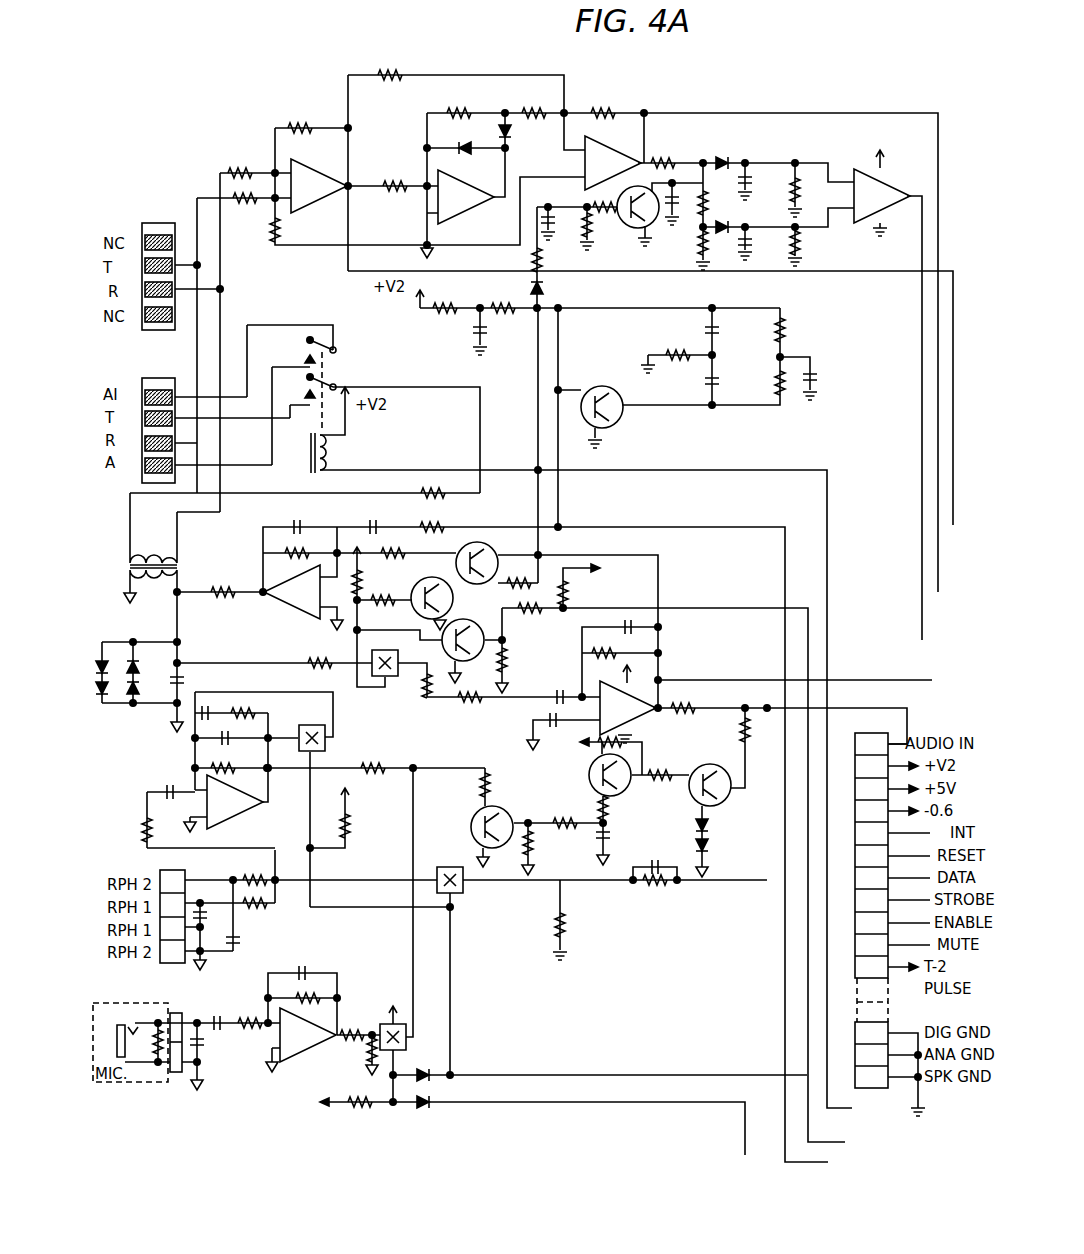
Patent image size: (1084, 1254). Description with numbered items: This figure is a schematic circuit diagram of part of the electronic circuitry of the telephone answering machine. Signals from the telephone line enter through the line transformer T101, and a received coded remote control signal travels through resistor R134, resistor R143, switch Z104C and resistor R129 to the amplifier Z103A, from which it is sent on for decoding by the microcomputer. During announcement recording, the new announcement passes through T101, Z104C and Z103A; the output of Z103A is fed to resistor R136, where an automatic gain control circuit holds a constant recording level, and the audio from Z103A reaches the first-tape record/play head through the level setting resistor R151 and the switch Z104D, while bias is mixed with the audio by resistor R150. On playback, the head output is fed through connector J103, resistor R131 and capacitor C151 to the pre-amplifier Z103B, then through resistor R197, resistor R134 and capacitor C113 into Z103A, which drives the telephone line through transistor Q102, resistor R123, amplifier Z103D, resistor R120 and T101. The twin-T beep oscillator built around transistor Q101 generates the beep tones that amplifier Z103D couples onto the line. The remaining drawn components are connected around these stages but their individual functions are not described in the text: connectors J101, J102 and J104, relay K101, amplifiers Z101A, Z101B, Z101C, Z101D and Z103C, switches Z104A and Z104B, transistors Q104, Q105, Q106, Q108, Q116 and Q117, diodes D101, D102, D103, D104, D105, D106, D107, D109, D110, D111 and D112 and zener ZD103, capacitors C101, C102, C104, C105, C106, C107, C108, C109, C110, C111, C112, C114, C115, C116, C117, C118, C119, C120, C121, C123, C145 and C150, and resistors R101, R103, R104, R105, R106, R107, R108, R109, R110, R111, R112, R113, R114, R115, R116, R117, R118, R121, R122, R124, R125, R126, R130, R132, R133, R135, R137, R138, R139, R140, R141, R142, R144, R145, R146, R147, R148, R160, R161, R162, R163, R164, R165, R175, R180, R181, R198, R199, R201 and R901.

The resistor R107 is at (388, 75).
The resistor R105 is at (302, 117).
The resistor R103 is at (244, 162).
The resistor R104 is at (241, 212).
The resistor R106 is at (297, 230).
The resistor R108 is at (387, 175).
The resistor R109 is at (456, 103).
The resistor R110 is at (531, 103).
The resistor R111 is at (597, 103).
The diode D105 is at (463, 138).
The diode D106 is at (529, 137).
The operational amplifier Z101D is at (319, 186).
The operational amplifier Z101C is at (466, 197).
The operational amplifier Z101B is at (613, 163).
The operational amplifier Z101A is at (882, 196).
The resistor R112 is at (670, 152).
The diode D107 is at (729, 183).
The capacitor C101 is at (767, 181).
The resistor R160 is at (816, 190).
The resistor R161 is at (725, 207).
The capacitor C102 is at (767, 243).
The resistor R113 is at (818, 243).
The resistor R175 is at (600, 204).
The resistor R163 is at (610, 229).
The capacitor C111 is at (679, 220).
The transistor Q108 is at (642, 229).
The capacitor C145 is at (565, 243).
The resistor R164 is at (512, 260).
The resistor R162 is at (703, 262).
The zener diode ZD103 is at (568, 288).
The resistor R114 is at (442, 296).
The resistor R115 is at (497, 296).
The capacitor C104 is at (503, 328).
The connector A J101 is at (168, 265).
The connector B J102 is at (170, 413).
The relay K101 is at (338, 410).
The resistor R101 is at (402, 483).
The capacitor C108 is at (296, 518).
The capacitor C109 is at (376, 518).
The resistor R122 is at (436, 517).
The resistor R121 is at (287, 546).
The resistor R123 is at (399, 546).
The line transformer T101 is at (153, 555).
The diode D101 is at (117, 669).
The diode D102 is at (83, 687).
The diode D103 is at (138, 661).
The diode D104 is at (128, 704).
The resistor R120 is at (211, 601).
The amplifier Z103D is at (292, 592).
The resistor R129 is at (311, 652).
The capacitor C110 is at (199, 673).
The capacitor C117 is at (237, 691).
The resistor R133 is at (261, 705).
The analog switch Z104B is at (314, 729).
The capacitor C116 is at (246, 732).
The resistor R132 is at (226, 759).
The resistor R197 is at (376, 759).
The resistor R130 is at (377, 582).
The resistor R125 is at (384, 610).
The transistor Q117 is at (442, 640).
The switch Z104C is at (384, 682).
The resistor R143 is at (427, 700).
The transistor Q102 is at (496, 558).
The resistor R124 is at (522, 576).
The transistor Q116 is at (453, 598).
The resistor R148 is at (526, 619).
The resistor R165 is at (524, 662).
The resistor R201 is at (585, 593).
The capacitor C112 is at (666, 623).
The resistor R126 is at (604, 646).
The capacitor C113 is at (561, 688).
The resistor R134 is at (476, 708).
The capacitor C151 is at (548, 720).
The amplifier Z103A is at (628, 708).
The resistor R135 is at (693, 699).
The resistor R138 is at (641, 735).
The resistor R136 is at (726, 731).
The resistor R137 is at (666, 765).
The transistor Q105 is at (589, 775).
The transistor Q104 is at (686, 785).
The diode D111 is at (726, 827).
The diode D112 is at (726, 847).
The capacitor C115 is at (167, 781).
The pre-amplifier Z103B is at (235, 802).
The resistor R131 is at (117, 830).
The resistor R144 is at (368, 826).
The transistor Q106 is at (473, 824).
The resistor R142 is at (507, 786).
The resistor R140 is at (566, 814).
The resistor R141 is at (551, 846).
The resistor R139 is at (625, 810).
The capacitor C118 is at (626, 841).
The capacitor C123 is at (673, 858).
The level setting resistor R151 is at (662, 895).
The resistor R150 is at (582, 925).
The switch Z104D is at (462, 893).
The connector J103 is at (189, 905).
The resistor R180 is at (250, 870).
The resistor R181 is at (266, 906).
The capacitor C114 is at (208, 915).
The capacitor C150 is at (255, 946).
The capacitor C121 is at (320, 965).
The resistor R147 is at (322, 996).
The resistor R146 is at (251, 1010).
The resistor R198 is at (359, 1024).
The resistor R199 is at (345, 1054).
The operational amplifier Z103C is at (308, 1035).
The capacitor C120 is at (222, 1018).
The capacitor C119 is at (217, 1047).
The resistor R901 is at (158, 1060).
The connector J104 is at (178, 1075).
The analog switch Z104A is at (410, 1040).
The diode D109 is at (430, 1073).
The resistor R145 is at (357, 1114).
The diode D110 is at (444, 1115).
The twin-T beep oscillator transistor Q101 is at (624, 403).
The resistor R116 is at (679, 346).
The capacitor C105 is at (732, 330).
The capacitor C106 is at (732, 383).
The resistor R117 is at (802, 330).
The capacitor C107 is at (832, 378).
The resistor R118 is at (798, 404).